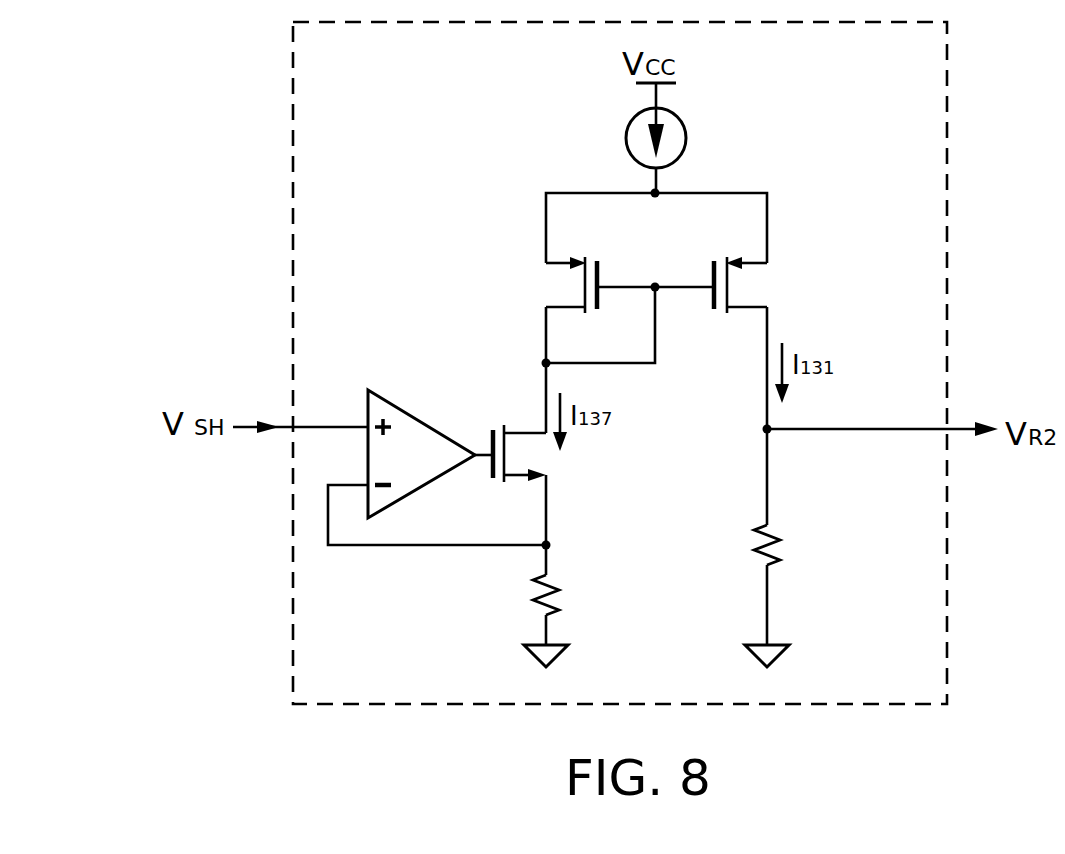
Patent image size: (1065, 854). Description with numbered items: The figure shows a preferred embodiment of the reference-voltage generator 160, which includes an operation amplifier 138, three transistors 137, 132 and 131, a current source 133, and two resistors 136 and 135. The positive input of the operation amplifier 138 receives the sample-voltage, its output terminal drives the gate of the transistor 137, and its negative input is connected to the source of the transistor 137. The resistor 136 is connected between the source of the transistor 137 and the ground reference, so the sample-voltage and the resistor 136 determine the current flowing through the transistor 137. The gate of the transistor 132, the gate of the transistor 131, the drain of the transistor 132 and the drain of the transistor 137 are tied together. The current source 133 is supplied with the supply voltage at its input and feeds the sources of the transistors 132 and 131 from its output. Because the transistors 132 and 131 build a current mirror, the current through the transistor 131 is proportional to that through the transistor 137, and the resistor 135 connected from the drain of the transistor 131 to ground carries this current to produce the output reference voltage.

The reference-voltage generator 160 is at (948, 75).
The current source 133 is at (700, 137).
The transistor 132 is at (552, 290).
The transistor 131 is at (772, 284).
The transistor 137 is at (548, 471).
The operation amplifier 138 is at (401, 398).
The resistor 136 is at (563, 598).
The resistor 135 is at (787, 548).